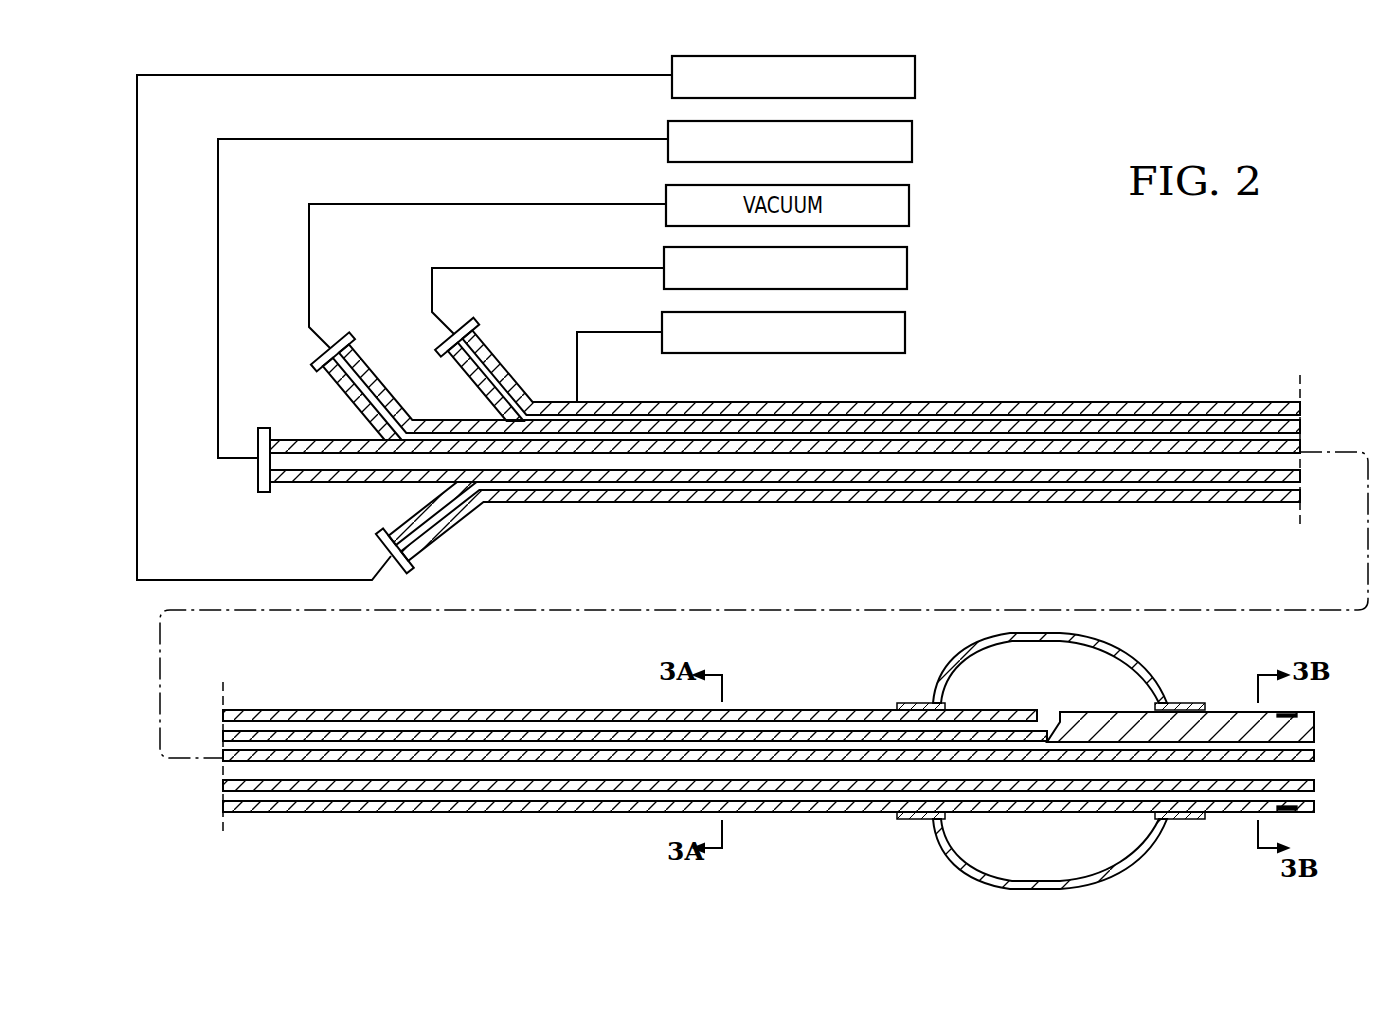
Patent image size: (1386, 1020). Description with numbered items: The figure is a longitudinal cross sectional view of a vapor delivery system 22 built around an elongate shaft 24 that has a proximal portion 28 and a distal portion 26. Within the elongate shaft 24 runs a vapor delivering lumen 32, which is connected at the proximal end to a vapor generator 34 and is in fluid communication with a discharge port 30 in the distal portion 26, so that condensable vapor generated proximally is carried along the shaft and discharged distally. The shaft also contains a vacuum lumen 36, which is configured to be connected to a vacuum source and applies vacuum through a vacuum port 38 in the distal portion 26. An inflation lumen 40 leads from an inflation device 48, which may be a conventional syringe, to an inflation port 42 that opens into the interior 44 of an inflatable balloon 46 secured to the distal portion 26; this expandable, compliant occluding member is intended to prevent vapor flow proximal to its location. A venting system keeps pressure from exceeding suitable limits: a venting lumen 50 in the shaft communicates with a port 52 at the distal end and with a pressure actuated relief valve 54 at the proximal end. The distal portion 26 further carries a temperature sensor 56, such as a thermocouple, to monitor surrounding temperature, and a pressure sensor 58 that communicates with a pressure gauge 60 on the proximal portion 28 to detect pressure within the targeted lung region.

The system 22 is at (1147, 325).
The elongate shaft 24 is at (292, 710).
The distal portion 26 is at (1225, 705).
The proximal portion 28 is at (605, 505).
The discharge port 30 is at (1316, 770).
The vapor delivering lumen 32 is at (965, 460).
The vapor generator 34 is at (912, 152).
The vacuum lumen 36 is at (1045, 438).
The vacuum port 38 is at (1316, 745).
The inflation lumen 40 is at (1197, 417).
The inflation port 42 is at (1050, 712).
The interior of the inflatable balloon 44 is at (1050, 761).
The inflatable balloon 46 is at (1160, 847).
The inflation device 48 is at (907, 279).
The venting lumen 50 is at (1137, 487).
The port 52 is at (1316, 795).
The pressure actuated relief valve 54 is at (915, 88).
The temperature sensor 56 is at (1295, 714).
The pressure sensor 58 is at (1297, 812).
The pressure gauge 60 is at (905, 343).